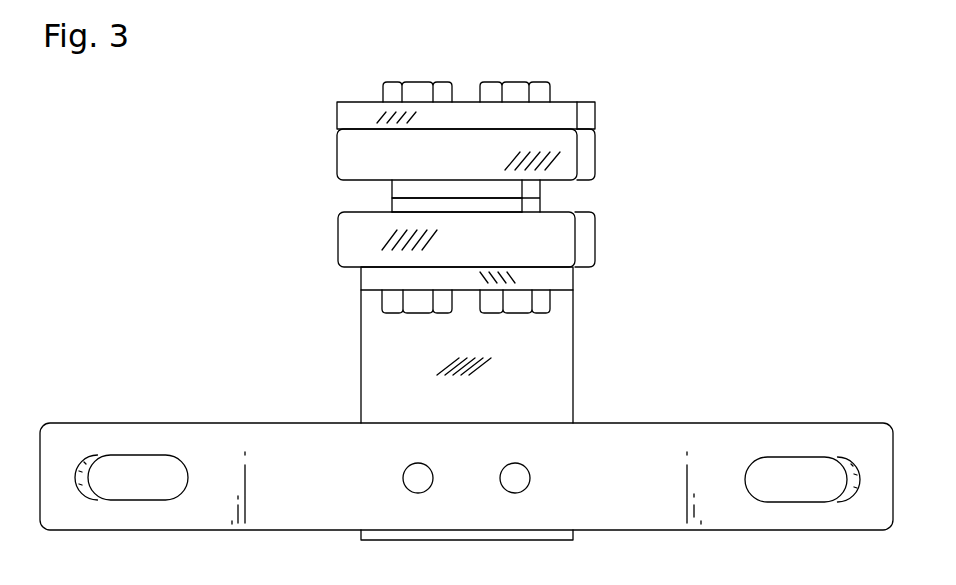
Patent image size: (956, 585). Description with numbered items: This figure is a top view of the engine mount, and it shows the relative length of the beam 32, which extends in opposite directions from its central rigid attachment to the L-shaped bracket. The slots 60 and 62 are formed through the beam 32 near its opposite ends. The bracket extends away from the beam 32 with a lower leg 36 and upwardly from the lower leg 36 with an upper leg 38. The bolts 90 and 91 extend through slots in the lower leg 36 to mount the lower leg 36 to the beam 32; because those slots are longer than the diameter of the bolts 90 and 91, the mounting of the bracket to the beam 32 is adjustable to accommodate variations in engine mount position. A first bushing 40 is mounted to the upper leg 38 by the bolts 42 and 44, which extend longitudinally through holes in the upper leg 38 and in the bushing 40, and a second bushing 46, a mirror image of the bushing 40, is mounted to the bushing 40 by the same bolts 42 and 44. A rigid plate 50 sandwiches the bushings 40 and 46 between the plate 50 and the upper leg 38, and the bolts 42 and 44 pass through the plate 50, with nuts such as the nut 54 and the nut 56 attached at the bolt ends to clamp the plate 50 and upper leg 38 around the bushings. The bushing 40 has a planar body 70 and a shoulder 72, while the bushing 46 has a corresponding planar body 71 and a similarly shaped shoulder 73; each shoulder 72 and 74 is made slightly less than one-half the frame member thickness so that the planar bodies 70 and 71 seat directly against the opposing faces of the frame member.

The beam 32 is at (645, 423).
The lower leg 36 is at (358, 352).
The upper leg 38 is at (577, 283).
The first bushing 40 is at (337, 242).
The bolt 42 is at (420, 313).
The bolt 44 is at (515, 302).
The second bushing 46 is at (600, 147).
The rigid plate 50 is at (337, 112).
The nut 54 is at (392, 90).
The upper nut 56 is at (545, 93).
The slot 60 is at (815, 457).
The slot 62 is at (110, 455).
The planar body 70 is at (597, 235).
The planar body 71 is at (573, 181).
The shoulder 72 is at (542, 205).
The shoulder 73 is at (385, 210).
The shoulder 74 is at (385, 189).
The bolt 90 is at (430, 463).
The bolt 91 is at (528, 470).